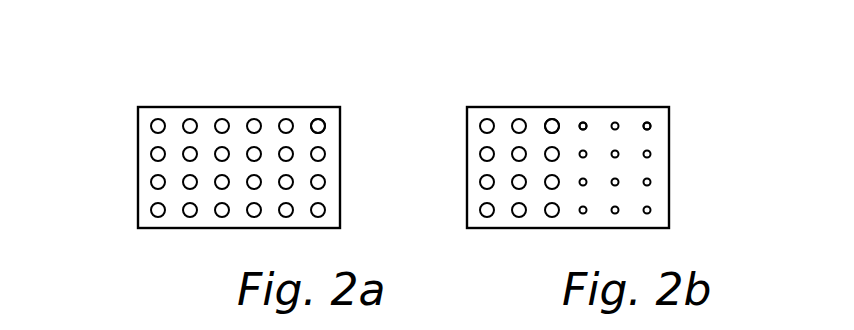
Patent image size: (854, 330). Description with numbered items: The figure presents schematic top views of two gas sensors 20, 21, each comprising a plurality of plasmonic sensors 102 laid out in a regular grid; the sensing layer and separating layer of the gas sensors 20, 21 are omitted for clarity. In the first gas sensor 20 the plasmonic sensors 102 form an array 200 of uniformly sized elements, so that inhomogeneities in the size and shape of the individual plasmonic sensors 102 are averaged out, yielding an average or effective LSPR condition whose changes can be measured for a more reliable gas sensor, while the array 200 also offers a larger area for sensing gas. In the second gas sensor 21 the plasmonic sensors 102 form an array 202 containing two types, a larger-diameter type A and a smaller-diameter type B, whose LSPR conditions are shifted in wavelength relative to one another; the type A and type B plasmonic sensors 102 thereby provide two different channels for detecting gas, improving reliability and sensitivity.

In FIG. 2A, the gas sensor 20 is at (110, 104).
In FIG. 2B, the gas sensor 21 is at (440, 105).
In FIG. 2A, the plasmonic sensor 102 is at (158, 126).
In FIG. 2B, the plasmonic sensor 102 is at (487, 126).
In FIG. 2A, the array 200 is at (310, 108).
In FIG. 2B, the array 202 is at (640, 105).
In FIG. 2B, the type A plasmonic sensor A is at (553, 120).
In FIG. 2B, the type B plasmonic sensor B is at (584, 122).